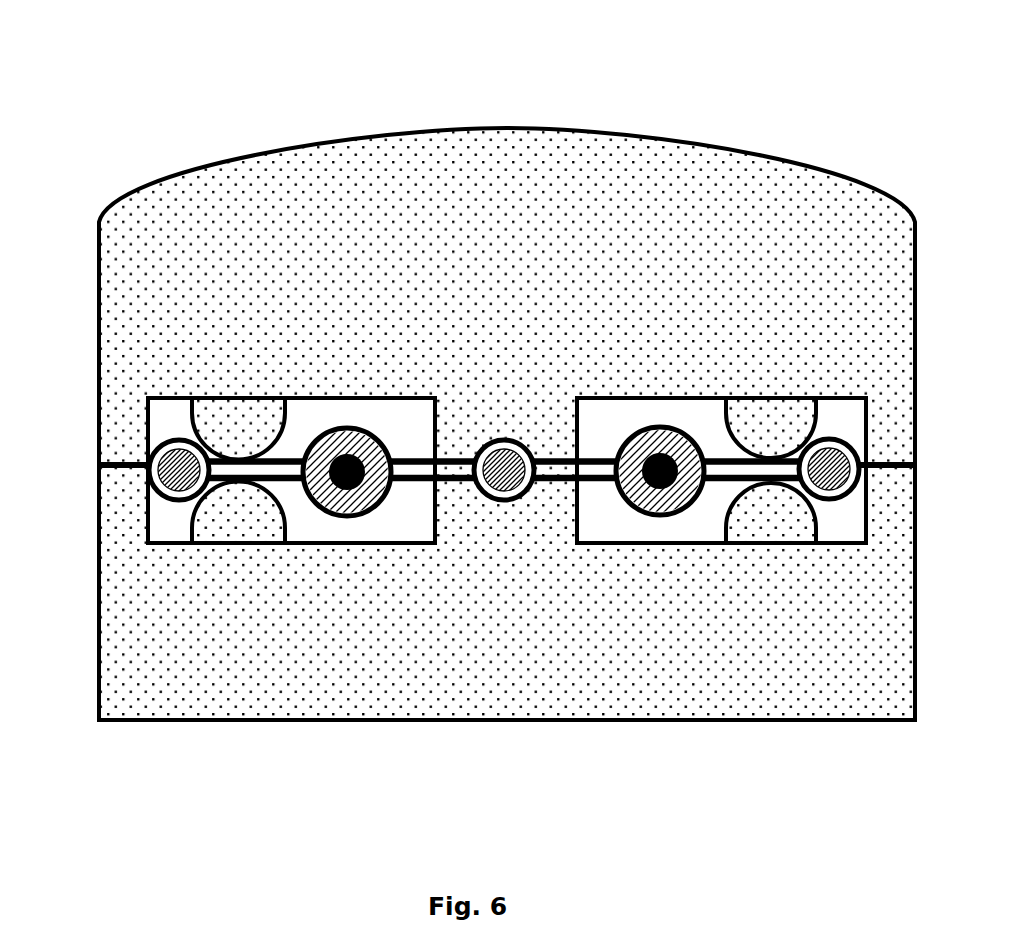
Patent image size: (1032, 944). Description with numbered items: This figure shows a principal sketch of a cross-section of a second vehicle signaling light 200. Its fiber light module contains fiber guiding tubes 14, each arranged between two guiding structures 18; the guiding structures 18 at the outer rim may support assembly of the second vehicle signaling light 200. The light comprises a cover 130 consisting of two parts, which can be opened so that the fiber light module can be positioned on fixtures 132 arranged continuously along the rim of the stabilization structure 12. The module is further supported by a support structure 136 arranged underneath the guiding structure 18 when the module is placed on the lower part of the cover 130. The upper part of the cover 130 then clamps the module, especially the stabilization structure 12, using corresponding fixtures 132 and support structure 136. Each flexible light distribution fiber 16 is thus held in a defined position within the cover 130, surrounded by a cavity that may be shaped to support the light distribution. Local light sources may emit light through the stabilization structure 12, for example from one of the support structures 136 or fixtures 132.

The second vehicle signaling light 200 is at (97, 112).
The cover 130 is at (580, 165).
The stabilization structure 12 is at (418, 483).
The fixtures 132 is at (787, 490).
The support structure 136 is at (545, 516).
The guiding structure 18 is at (507, 441).
The flexible light distribution fiber 16 is at (356, 448).
The fiber guiding tube 14 is at (663, 428).